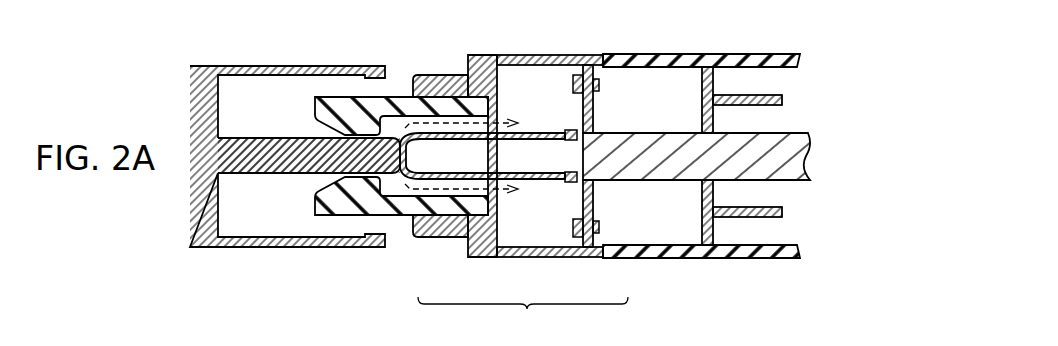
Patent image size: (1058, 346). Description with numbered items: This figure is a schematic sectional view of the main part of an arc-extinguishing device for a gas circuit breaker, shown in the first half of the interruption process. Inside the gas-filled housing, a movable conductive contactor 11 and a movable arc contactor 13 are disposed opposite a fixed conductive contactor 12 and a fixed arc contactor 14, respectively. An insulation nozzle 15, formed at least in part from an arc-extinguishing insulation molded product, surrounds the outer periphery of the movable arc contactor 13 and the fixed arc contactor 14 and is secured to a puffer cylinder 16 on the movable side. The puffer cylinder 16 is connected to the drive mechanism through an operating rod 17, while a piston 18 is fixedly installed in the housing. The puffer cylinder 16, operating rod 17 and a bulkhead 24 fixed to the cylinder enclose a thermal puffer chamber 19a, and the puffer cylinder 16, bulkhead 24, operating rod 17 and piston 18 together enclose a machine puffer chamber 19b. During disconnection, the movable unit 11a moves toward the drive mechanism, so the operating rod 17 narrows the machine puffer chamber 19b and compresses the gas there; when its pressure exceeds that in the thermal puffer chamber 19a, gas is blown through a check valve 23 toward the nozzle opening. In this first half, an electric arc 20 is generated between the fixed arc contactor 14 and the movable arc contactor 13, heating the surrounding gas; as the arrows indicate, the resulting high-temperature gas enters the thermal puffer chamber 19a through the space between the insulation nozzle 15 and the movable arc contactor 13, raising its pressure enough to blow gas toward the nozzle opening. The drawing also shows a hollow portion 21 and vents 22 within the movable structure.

The movable conductive contactor 11 is at (481, 241).
The movable unit 11a is at (523, 316).
The fixed conductive contactor 12 is at (375, 248).
The movable arc contactor 13 is at (460, 238).
The fixed arc contactor 14 is at (307, 162).
The insulation nozzle 15 is at (433, 206).
The puffer cylinder 16 is at (552, 258).
The operating rod 17 is at (625, 168).
The piston 18 is at (747, 95).
The thermal puffer chamber 19a is at (520, 80).
The machine puffer chamber 19b is at (685, 80).
The electric arc 20 is at (403, 97).
The hollow portion 21 is at (444, 140).
The vents 22 is at (570, 130).
The check valve 23 is at (599, 82).
The bulkhead 24 is at (592, 103).